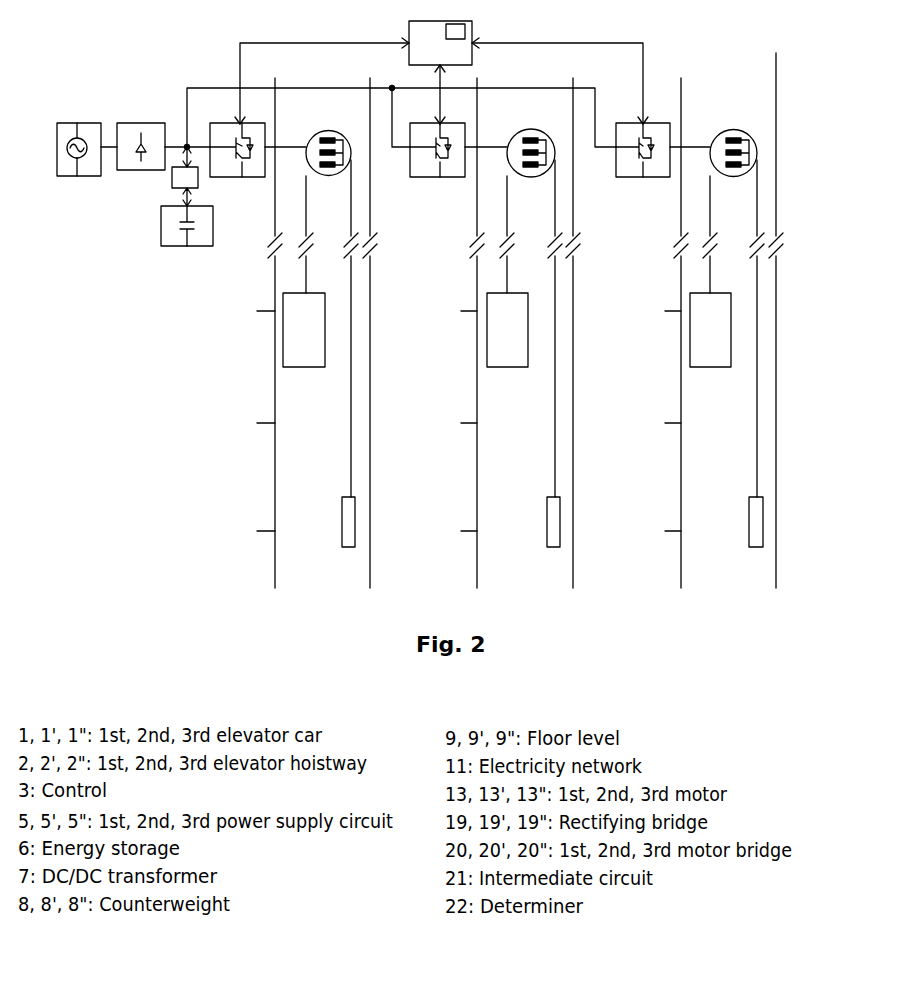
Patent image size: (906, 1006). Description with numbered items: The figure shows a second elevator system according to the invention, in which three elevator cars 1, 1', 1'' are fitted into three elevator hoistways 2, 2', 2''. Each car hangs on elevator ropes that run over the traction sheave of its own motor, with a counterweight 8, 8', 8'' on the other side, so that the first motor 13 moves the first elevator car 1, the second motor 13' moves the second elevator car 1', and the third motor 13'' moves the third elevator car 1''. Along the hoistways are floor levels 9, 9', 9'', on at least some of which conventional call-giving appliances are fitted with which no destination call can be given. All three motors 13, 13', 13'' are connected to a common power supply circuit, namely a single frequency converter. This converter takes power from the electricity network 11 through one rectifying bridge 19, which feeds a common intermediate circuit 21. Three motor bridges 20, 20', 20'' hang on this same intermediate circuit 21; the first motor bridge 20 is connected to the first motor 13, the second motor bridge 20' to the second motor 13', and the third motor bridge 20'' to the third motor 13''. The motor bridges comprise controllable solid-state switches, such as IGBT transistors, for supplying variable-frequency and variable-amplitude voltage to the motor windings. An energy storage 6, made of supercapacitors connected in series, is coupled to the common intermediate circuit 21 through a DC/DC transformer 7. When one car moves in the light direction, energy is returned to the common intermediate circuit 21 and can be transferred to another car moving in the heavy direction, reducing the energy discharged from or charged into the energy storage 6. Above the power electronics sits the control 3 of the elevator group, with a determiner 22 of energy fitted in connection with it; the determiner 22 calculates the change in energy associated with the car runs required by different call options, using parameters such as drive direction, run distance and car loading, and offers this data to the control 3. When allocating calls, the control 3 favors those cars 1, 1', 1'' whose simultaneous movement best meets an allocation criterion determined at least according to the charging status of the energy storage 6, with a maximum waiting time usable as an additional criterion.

The first elevator car 1 is at (306, 294).
The second elevator car 1' is at (513, 294).
The third elevator car 1'' is at (719, 294).
The first elevator hoistway 2 is at (284, 333).
The second elevator hoistway 2' is at (502, 333).
The third elevator hoistway 2'' is at (707, 320).
The control 3 is at (409, 30).
The energy storage 6 is at (185, 247).
The DC/DC transformer 7 is at (172, 178).
The first counterweight 8 is at (330, 353).
The second counterweight 8' is at (532, 353).
The third counterweight 8'' is at (736, 353).
The first floor level 9 is at (243, 421).
The second floor level 9' is at (445, 421).
The third floor level 9'' is at (649, 421).
The electricity network 11 is at (72, 124).
The first motor 13 is at (318, 139).
The second motor 13' is at (534, 115).
The third motor 13'' is at (737, 124).
The rectifying bridge 19 is at (140, 172).
The first motor bridge 20 is at (237, 179).
The second motor bridge 20' is at (437, 179).
The third motor bridge 20'' is at (643, 179).
The intermediate circuit 21 is at (214, 88).
The determiner 22 is at (462, 31).